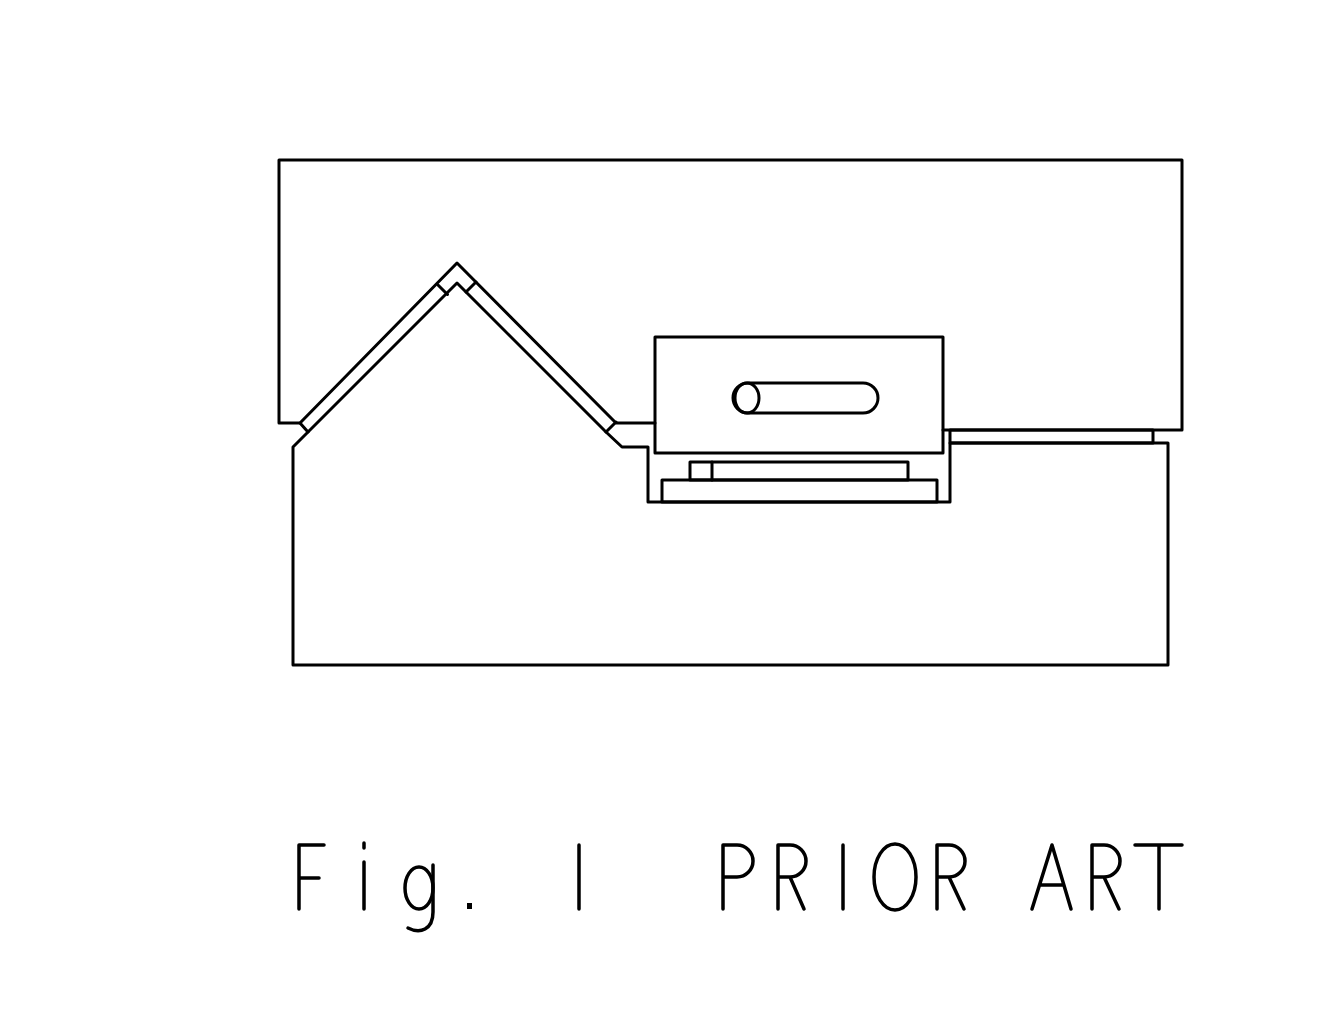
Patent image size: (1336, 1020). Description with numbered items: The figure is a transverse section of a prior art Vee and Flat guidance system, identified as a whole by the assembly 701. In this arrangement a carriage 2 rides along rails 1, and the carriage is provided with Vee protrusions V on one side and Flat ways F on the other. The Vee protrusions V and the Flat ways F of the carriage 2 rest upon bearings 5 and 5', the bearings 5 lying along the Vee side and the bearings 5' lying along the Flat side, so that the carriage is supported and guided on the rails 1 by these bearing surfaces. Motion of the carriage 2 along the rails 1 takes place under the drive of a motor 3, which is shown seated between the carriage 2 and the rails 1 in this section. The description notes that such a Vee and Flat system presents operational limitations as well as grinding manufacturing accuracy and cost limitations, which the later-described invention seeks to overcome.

The prior art optical module assembly 701 is at (373, 125).
The rails 1 is at (1093, 648).
The carriage 2 is at (1075, 315).
The motor 3 is at (840, 473).
The bearings 5 is at (395, 457).
The bearings 5' is at (1134, 474).
The Vee protrusions V is at (550, 330).
The Flat ways F is at (1055, 420).